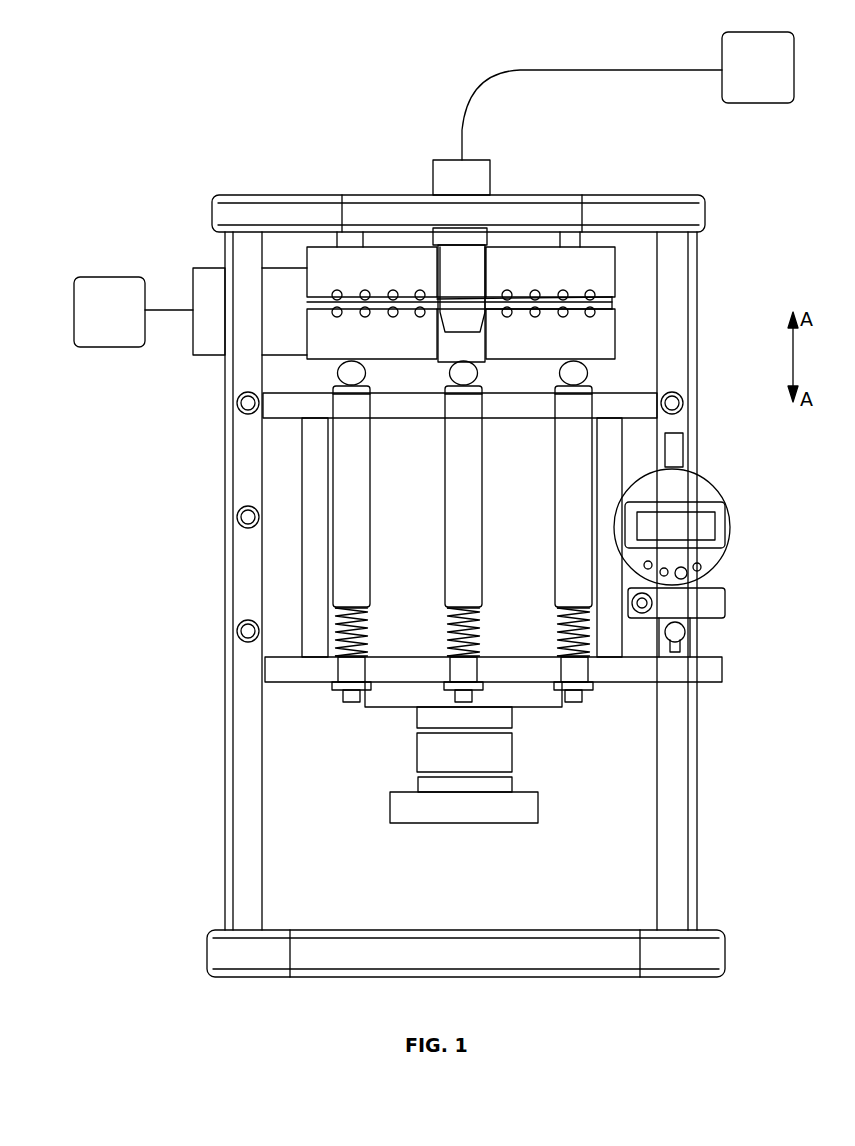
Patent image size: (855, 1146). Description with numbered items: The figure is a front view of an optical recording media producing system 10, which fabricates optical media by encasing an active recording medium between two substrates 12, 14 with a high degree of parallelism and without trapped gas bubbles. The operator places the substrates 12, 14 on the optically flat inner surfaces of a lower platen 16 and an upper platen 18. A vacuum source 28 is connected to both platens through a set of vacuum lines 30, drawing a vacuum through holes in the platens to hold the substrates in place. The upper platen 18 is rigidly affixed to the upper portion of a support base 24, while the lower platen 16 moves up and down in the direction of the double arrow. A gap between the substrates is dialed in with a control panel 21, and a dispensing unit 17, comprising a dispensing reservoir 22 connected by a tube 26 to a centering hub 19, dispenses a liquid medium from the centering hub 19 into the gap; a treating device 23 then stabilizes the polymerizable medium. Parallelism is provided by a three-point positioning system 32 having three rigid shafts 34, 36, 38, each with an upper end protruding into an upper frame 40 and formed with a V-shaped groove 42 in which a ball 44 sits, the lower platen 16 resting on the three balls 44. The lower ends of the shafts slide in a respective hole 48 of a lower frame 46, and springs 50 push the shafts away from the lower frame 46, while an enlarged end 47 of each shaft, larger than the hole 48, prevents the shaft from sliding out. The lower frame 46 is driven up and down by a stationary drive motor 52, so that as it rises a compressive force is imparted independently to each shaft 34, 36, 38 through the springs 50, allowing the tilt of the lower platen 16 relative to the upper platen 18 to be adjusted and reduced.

The optical recording media producing system 10 is at (158, 560).
The substrate 12 is at (612, 309).
The substrate 14 is at (612, 297).
The lower platen 16 is at (337, 349).
The dispensing unit 17 is at (582, 123).
The upper platen 18 is at (339, 281).
The centering hub 19 is at (490, 172).
The control panel 21 is at (728, 520).
The dispensing reservoir 22 is at (768, 80).
The treating device 23 is at (588, 290).
The support base 24 is at (680, 772).
The tube 26 is at (540, 70).
The vacuum source 28 is at (121, 323).
The vacuum lines 30 is at (195, 268).
The three-point positioning system 32 is at (294, 631).
The rigid shaft 34 is at (363, 539).
The rigid shaft 36 is at (475, 539).
The rigid shaft 38 is at (586, 539).
The upper frame 40 is at (405, 410).
The V-shaped groove 42 is at (345, 400).
The ball 44 is at (368, 378).
The lower frame 46 is at (595, 675).
The enlarged end 47 is at (352, 693).
The hole 48 is at (343, 668).
The springs 50 is at (368, 628).
The drive motor 52 is at (420, 818).